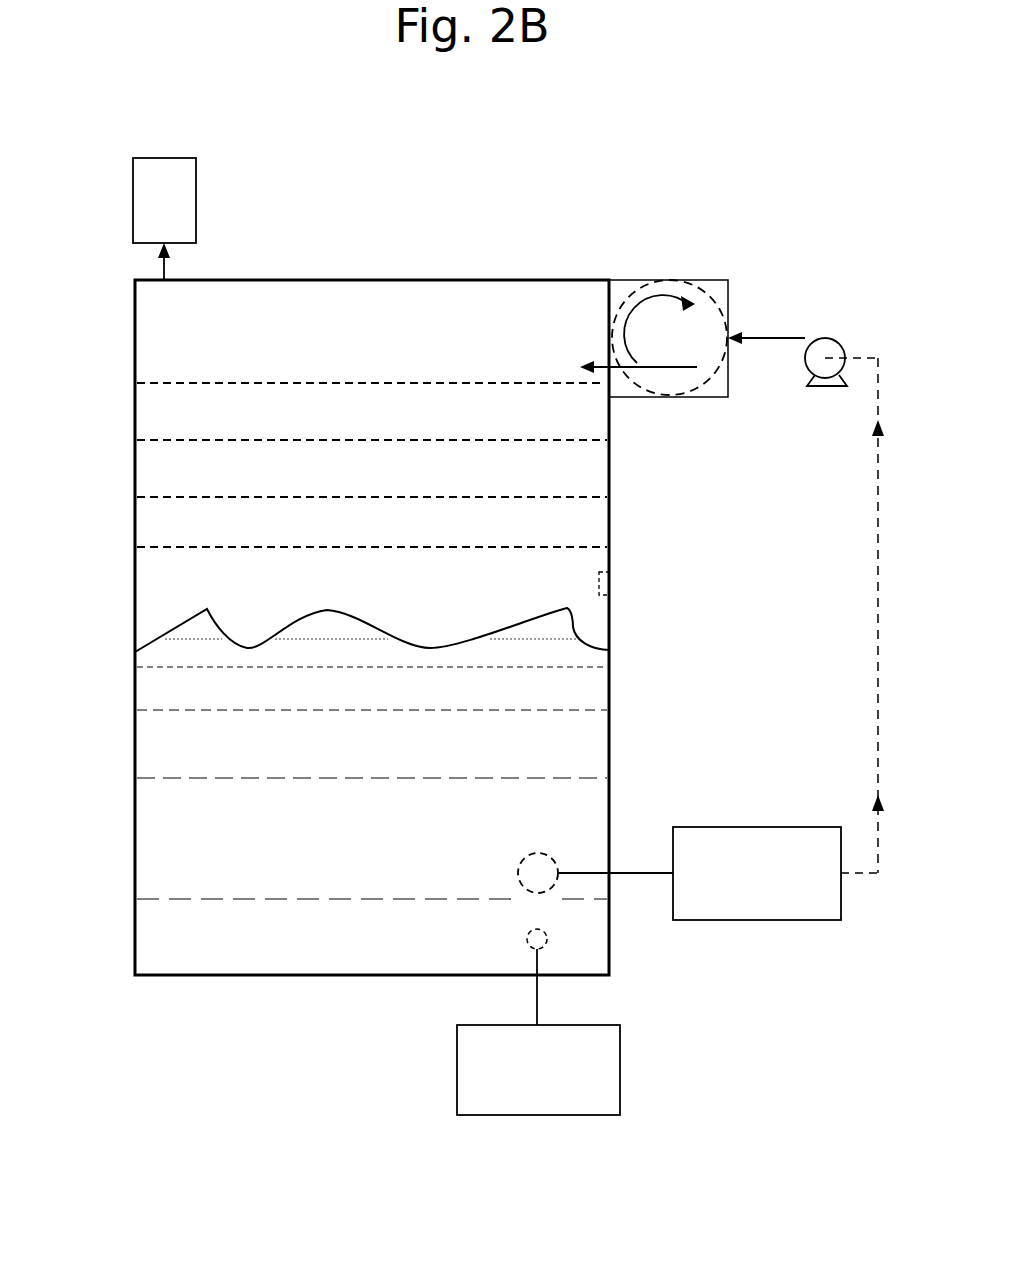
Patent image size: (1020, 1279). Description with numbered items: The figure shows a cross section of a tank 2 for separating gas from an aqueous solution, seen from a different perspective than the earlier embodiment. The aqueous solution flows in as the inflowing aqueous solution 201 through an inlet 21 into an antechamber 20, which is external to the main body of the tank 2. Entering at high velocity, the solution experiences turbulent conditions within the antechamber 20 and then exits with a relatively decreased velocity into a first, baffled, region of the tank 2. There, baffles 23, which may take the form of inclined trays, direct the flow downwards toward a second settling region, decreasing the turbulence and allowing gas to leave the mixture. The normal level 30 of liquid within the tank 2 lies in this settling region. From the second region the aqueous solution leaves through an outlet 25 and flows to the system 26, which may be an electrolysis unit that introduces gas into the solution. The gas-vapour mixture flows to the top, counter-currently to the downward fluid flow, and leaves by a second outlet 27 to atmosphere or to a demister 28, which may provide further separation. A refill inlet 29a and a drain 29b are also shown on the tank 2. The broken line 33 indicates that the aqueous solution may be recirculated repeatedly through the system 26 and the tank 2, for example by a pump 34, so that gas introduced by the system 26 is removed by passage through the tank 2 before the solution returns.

The tank 2 is at (366, 220).
The antechamber 20 is at (692, 282).
The inlet 21 is at (730, 333).
The inflowing aqueous solution 201 is at (765, 340).
The baffles 23 is at (585, 442).
The outlet 25 is at (555, 858).
The system 26 is at (777, 827).
The second outlet 27 is at (163, 280).
The demister 28 is at (160, 158).
The refill inlet 29a is at (611, 582).
The drain 29b is at (548, 934).
The normal level 30 is at (575, 624).
The broken line 33 is at (878, 527).
The pump 34 is at (836, 343).